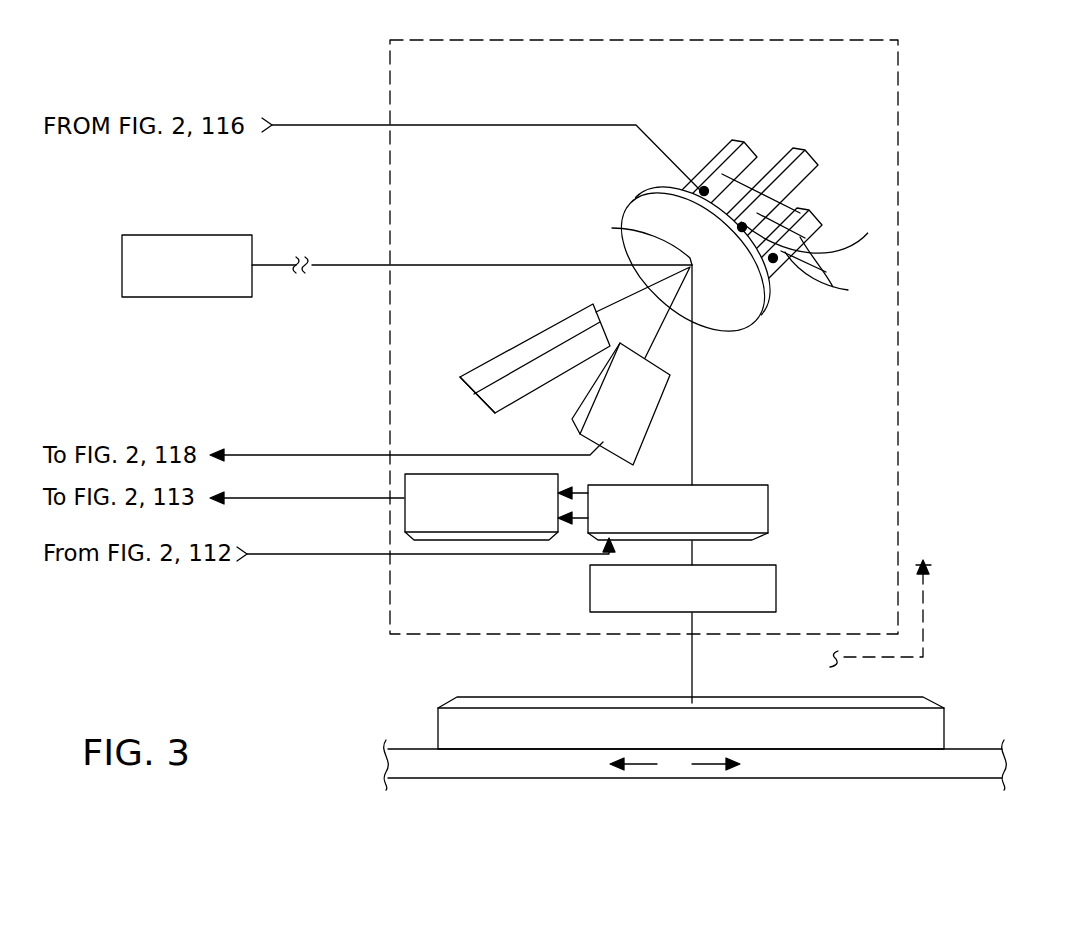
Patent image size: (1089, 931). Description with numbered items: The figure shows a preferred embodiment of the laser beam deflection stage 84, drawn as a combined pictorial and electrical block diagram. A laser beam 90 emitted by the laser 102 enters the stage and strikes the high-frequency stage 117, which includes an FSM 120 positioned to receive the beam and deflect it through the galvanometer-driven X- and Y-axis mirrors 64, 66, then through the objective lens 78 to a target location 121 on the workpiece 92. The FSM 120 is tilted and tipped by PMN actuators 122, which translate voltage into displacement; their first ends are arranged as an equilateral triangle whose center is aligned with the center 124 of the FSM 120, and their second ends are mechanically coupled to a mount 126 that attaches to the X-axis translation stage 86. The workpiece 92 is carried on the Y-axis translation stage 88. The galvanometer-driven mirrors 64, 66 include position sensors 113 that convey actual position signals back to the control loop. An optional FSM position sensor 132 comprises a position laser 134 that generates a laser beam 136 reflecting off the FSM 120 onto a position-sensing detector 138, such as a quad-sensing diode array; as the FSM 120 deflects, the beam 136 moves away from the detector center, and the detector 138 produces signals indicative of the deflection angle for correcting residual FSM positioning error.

The laser beam deflection stage 84 is at (390, 600).
The laser 102 is at (200, 236).
The laser beam 90 is at (342, 264).
The high-frequency stage 117 is at (597, 174).
The mount 126 is at (856, 176).
The PMN actuators 122 is at (837, 268).
The FSM 120 is at (735, 313).
The center of FSM 124 is at (629, 241).
The FSM position sensor 132 is at (492, 326).
The position laser 134 is at (509, 394).
The laser beam 136 is at (664, 307).
The position-sensing detector 138 is at (582, 412).
The position sensors 113 is at (490, 531).
The galvanometer-driven X-axis mirror 64 is at (676, 494).
The galvanometer-driven Y-axis mirror 66 is at (713, 488).
The objective lens 78 is at (777, 587).
The X-axis translation stage 86 is at (925, 625).
The workpiece 92 is at (881, 703).
The target location 121 is at (691, 704).
The Y-axis translation stage 88 is at (967, 758).